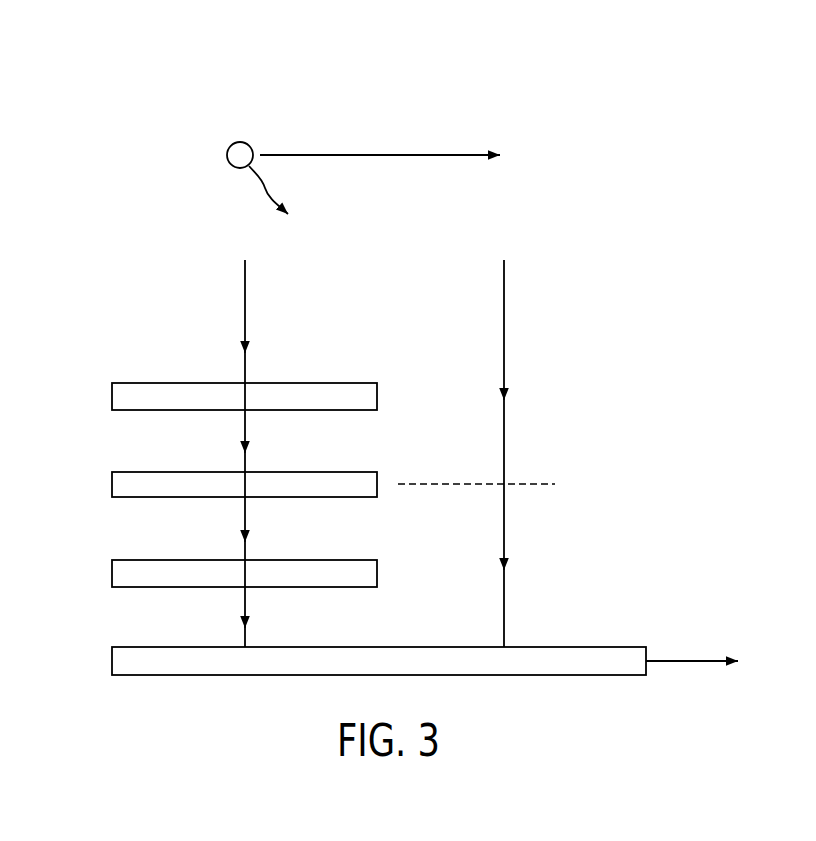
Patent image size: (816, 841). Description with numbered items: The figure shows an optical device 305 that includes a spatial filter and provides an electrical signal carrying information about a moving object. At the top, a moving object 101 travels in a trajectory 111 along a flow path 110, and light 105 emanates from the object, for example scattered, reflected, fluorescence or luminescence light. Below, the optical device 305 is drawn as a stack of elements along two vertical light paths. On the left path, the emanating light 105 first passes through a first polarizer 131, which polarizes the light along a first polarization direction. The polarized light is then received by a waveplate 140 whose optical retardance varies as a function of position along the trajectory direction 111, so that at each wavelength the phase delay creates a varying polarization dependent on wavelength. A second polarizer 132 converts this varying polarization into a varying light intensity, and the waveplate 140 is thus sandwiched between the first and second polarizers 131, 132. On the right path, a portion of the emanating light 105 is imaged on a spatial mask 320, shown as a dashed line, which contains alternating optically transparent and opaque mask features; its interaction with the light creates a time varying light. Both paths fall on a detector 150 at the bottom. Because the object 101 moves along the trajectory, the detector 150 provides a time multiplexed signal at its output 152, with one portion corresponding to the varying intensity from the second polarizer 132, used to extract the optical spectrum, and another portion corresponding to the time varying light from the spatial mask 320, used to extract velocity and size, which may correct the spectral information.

The flow path 110 is at (383, 116).
The moving object 101 is at (227, 155).
The emanating light 105 is at (268, 186).
The trajectory 111 is at (420, 157).
The optical device 305 is at (598, 359).
The first polarizer 131 is at (112, 393).
The waveplate 140 is at (112, 485).
The spatial mask 320 is at (530, 483).
The second polarizer 132 is at (112, 572).
The detector 150 is at (112, 657).
The output 152 is at (709, 659).